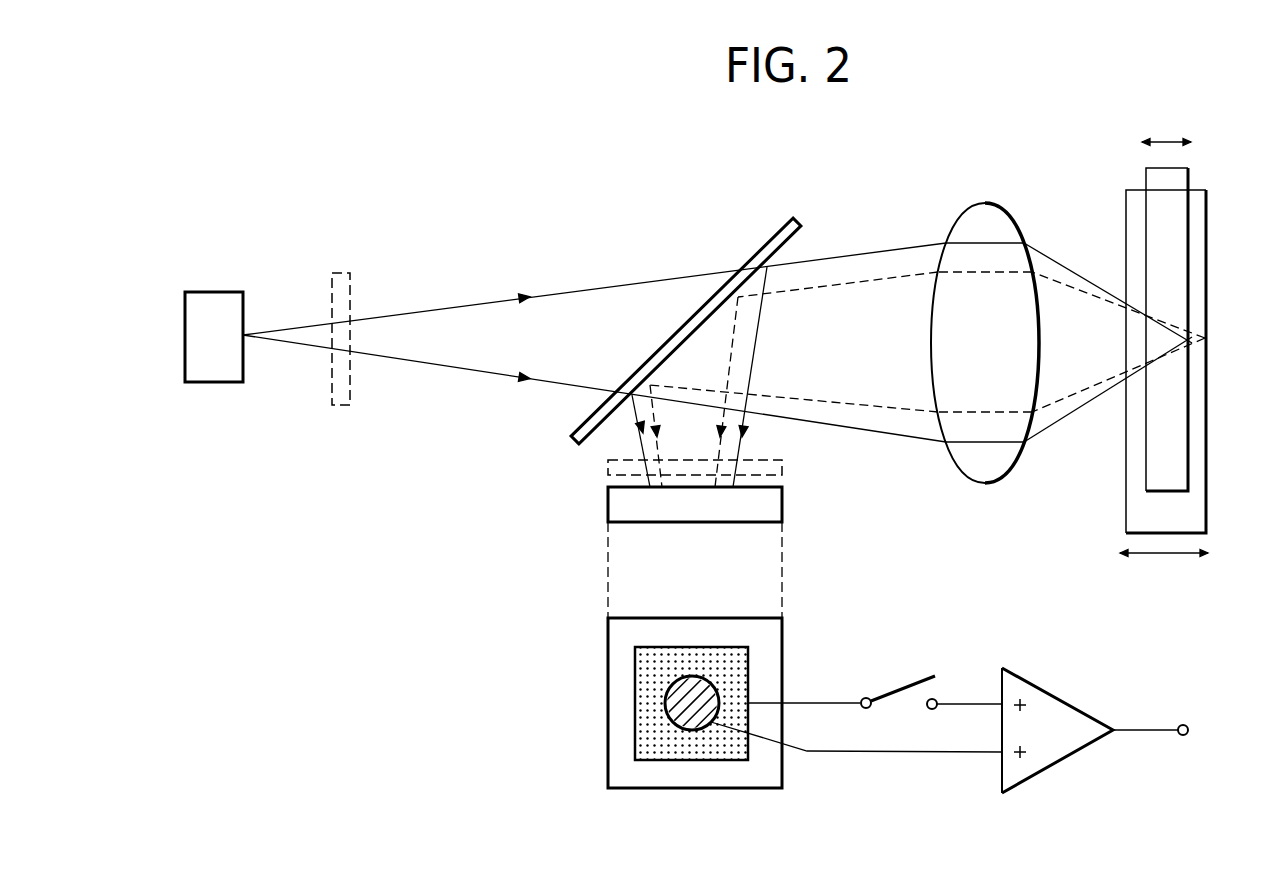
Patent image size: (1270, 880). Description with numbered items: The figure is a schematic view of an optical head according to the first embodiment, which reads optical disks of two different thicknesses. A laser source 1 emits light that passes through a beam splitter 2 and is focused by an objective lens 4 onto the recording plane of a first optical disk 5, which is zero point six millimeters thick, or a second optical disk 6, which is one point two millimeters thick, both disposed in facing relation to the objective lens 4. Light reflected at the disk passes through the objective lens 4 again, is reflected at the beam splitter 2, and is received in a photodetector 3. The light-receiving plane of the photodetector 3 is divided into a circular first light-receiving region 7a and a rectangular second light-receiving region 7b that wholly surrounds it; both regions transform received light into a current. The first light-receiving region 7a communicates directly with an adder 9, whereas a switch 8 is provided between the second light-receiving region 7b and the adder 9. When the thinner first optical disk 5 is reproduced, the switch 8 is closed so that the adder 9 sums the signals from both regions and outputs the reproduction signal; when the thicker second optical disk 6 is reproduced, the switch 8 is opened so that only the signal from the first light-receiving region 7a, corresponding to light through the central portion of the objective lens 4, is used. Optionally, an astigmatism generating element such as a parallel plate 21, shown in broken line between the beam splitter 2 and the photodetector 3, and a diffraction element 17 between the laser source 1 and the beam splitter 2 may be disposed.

The laser source 1 is at (210, 298).
The diffraction element 17 is at (345, 397).
The beam splitter 2 is at (772, 228).
The parallel plate 21 is at (608, 468).
The photodetector 3 is at (780, 506).
The objective lens 4 is at (983, 220).
The first optical disk 5 is at (1187, 177).
The second optical disk 6 is at (1198, 510).
The first light-receiving region 7a is at (673, 705).
The second light-receiving region 7b is at (638, 683).
The switch 8 is at (900, 687).
The adder 9 is at (1048, 698).